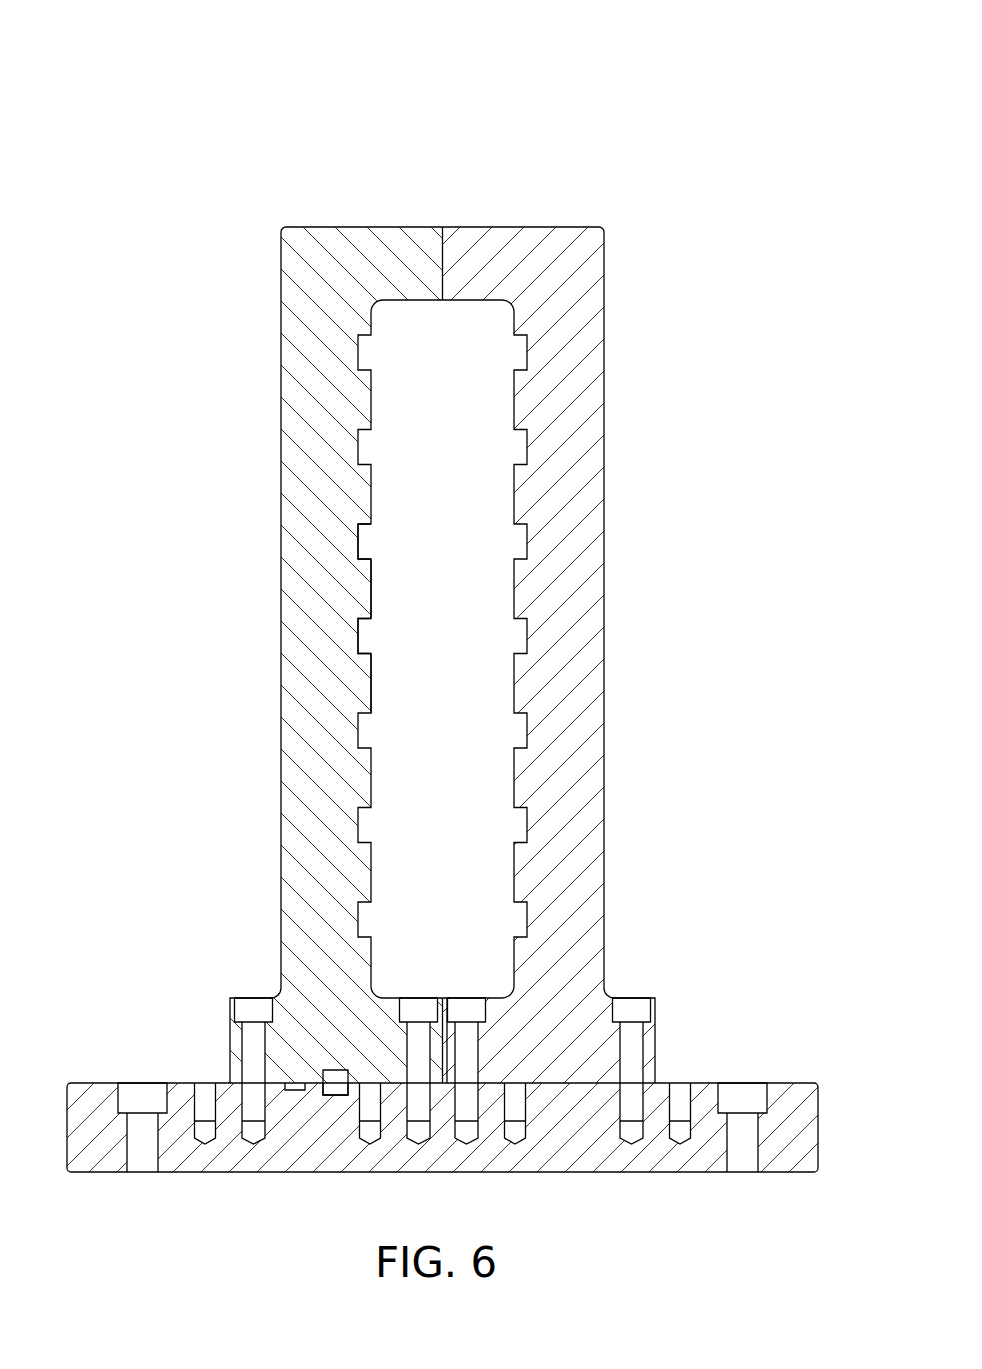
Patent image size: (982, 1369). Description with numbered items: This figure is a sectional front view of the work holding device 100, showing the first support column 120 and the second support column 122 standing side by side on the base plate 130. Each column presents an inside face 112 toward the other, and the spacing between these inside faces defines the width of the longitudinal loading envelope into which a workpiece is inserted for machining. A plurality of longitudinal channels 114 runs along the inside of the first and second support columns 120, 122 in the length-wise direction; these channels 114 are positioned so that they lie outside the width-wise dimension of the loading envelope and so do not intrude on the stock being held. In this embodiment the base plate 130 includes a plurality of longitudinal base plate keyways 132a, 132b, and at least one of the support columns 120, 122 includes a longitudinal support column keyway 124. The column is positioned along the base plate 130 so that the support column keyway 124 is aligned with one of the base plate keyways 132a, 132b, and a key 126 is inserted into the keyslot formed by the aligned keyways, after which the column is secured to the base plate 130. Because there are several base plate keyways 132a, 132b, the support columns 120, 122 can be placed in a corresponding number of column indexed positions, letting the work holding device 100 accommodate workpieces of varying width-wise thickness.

The work holding device 100 is at (675, 140).
The first support column 120 is at (317, 222).
The second support column 122 is at (573, 225).
The base plate 130 is at (762, 1080).
The longitudinal channels 114 is at (359, 545).
The inside face 112 is at (371, 591).
The longitudinal base plate keyway 132a is at (297, 1087).
The longitudinal support column keyway 124 is at (336, 1075).
The key 126 is at (337, 1095).
The longitudinal base plate keyway 132b is at (325, 1092).